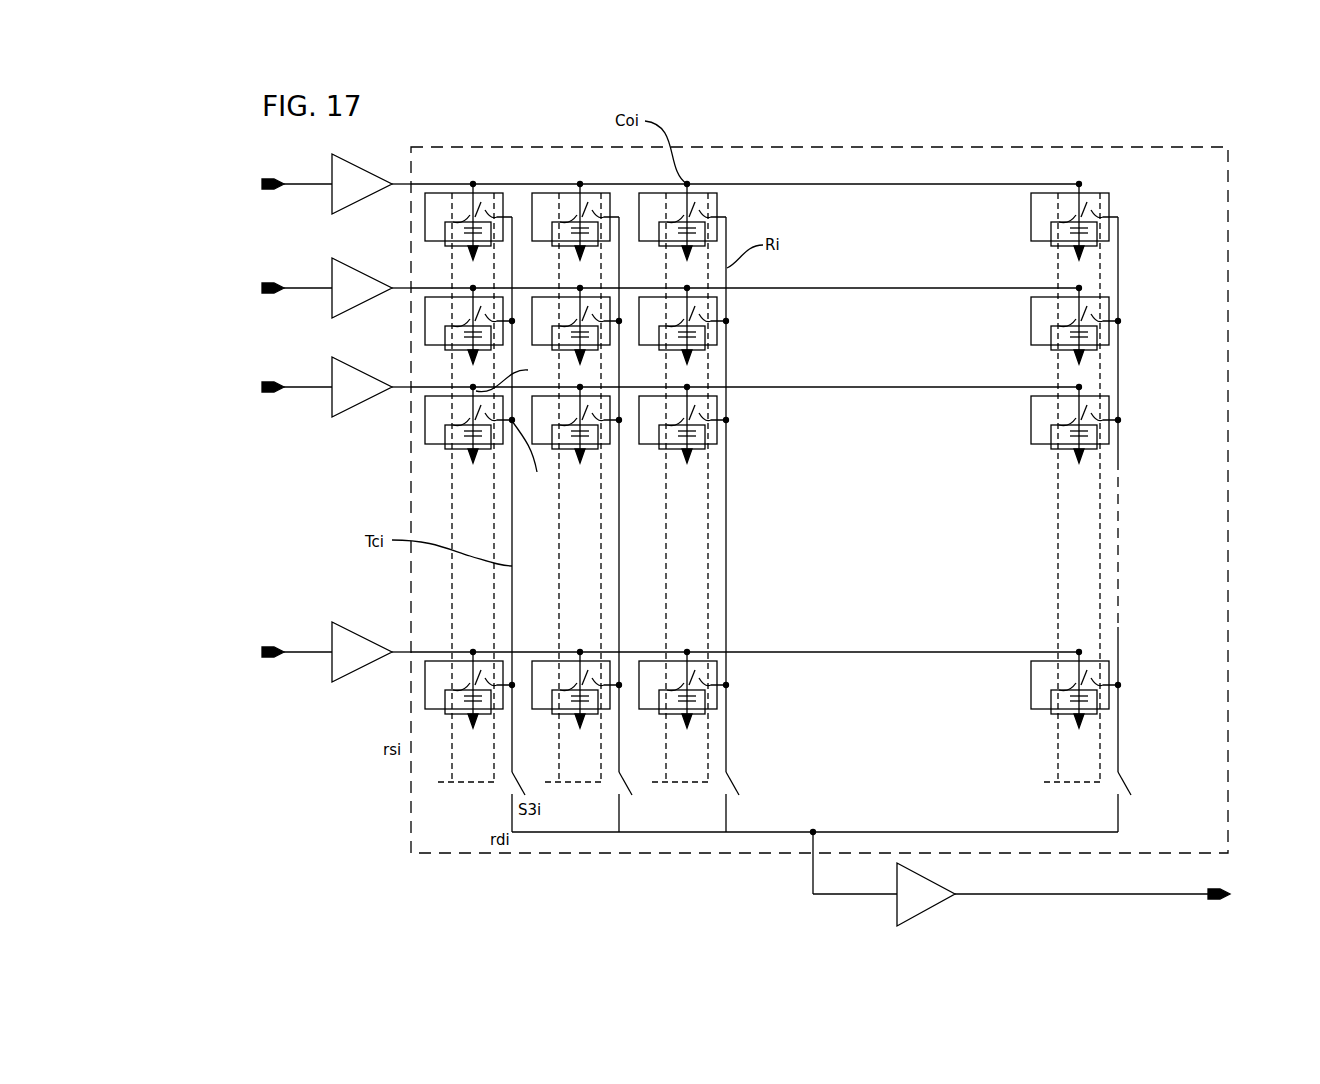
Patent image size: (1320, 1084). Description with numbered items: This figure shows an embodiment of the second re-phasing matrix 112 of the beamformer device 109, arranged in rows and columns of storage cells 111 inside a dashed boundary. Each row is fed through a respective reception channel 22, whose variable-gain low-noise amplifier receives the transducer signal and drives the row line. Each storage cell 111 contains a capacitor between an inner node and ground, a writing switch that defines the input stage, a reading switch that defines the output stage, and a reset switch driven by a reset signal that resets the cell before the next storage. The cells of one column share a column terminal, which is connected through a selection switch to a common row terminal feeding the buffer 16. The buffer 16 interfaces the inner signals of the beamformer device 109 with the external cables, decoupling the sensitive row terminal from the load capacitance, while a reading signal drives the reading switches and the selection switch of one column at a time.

The reception channel 22 is at (365, 418).
The storage cell 111 is at (424, 434).
The beamformer device 109 is at (1232, 278).
The re-phasing matrix 112 is at (1122, 533).
The buffer 16 is at (932, 880).